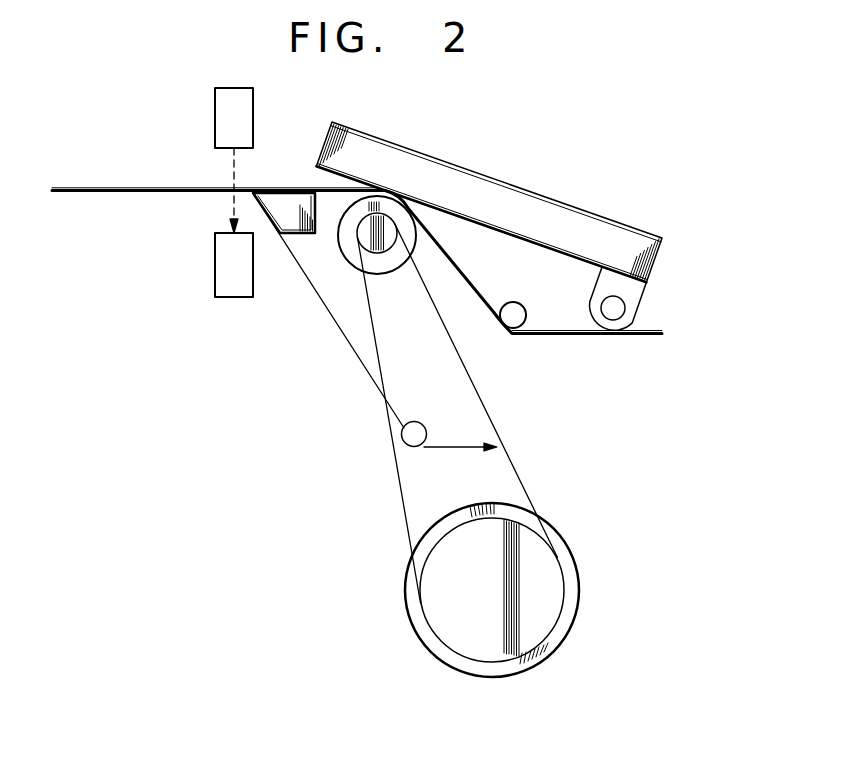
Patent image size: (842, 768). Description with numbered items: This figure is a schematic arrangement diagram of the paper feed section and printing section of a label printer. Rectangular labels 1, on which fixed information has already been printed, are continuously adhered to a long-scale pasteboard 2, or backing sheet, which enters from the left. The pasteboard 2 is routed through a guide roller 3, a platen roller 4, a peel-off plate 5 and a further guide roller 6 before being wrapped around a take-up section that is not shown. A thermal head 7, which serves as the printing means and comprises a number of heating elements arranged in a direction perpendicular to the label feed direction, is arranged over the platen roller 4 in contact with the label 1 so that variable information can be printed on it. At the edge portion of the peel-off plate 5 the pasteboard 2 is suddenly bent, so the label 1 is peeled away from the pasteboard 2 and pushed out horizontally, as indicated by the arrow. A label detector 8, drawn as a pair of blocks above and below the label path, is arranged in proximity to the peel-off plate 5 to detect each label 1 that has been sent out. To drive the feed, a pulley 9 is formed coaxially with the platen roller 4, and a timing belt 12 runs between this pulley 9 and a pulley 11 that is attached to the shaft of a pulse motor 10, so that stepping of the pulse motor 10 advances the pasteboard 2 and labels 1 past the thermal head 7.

The label 1 is at (89, 186).
The pasteboard 2 is at (340, 334).
The guide roller 3 is at (510, 308).
The platen roller 4 is at (351, 256).
The peel-off plate 5 is at (304, 235).
The guide roller 6 is at (414, 425).
The thermal head 7 is at (548, 220).
The label detector 8 is at (222, 118).
The pulley 9 is at (385, 245).
The pulse motor 10 is at (415, 617).
The pulley 11 is at (455, 549).
The timing belt 12 is at (480, 390).